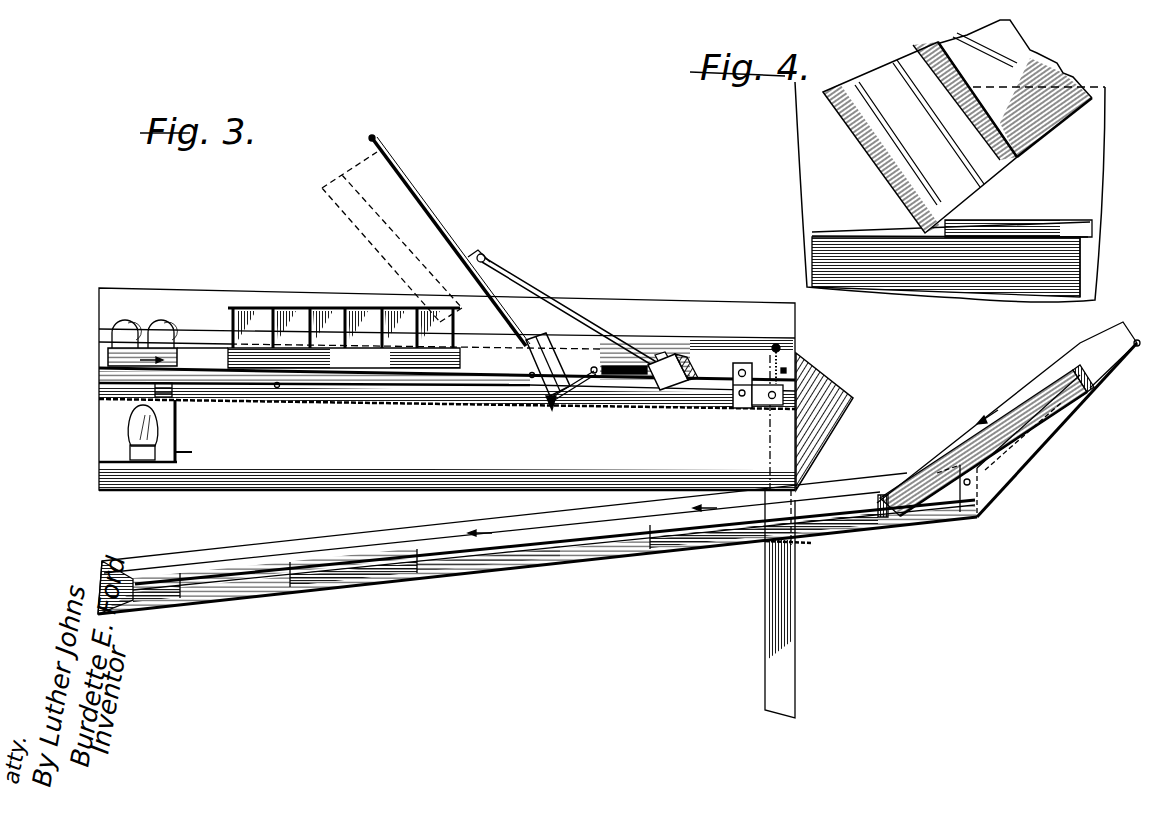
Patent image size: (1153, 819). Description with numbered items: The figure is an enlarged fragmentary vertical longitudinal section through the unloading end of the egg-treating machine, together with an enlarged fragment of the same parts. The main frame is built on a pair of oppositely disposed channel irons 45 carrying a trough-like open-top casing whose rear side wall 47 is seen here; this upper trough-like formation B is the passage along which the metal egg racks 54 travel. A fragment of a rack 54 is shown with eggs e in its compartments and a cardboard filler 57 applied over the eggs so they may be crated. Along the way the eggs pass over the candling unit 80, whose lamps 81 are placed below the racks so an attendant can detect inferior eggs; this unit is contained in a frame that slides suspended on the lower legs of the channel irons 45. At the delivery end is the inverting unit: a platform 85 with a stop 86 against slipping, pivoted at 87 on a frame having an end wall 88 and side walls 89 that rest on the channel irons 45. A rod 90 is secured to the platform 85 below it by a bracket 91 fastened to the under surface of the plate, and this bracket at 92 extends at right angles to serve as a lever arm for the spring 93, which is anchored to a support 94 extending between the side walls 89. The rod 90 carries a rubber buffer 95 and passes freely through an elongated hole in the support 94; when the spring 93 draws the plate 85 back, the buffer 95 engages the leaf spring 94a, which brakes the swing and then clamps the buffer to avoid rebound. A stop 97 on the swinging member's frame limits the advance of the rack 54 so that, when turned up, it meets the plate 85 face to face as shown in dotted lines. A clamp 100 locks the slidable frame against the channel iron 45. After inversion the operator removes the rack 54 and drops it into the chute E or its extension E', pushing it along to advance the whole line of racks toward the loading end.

In FIG. 3, the upper trough-like formation B is at (476, 390).
In FIG. 3, the channel irons 45 is at (202, 385).
In FIG. 4, the channel irons 45 is at (1028, 287).
In FIG. 3, the rear side wall 47 is at (193, 350).
In FIG. 4, the rear side wall 47 is at (842, 223).
In FIG. 3, the egg rack 54 is at (108, 355).
In FIG. 4, the egg rack 54 is at (920, 137).
In FIG. 3, the filler 57 is at (283, 308).
In FIG. 4, the filler 57 is at (1043, 130).
In FIG. 3, the eggs e is at (132, 322).
In FIG. 3, the candling unit 80 is at (113, 417).
In FIG. 3, the lamps 81 is at (142, 425).
In FIG. 3, the platform 85 is at (432, 218).
In FIG. 3, the stop 86 is at (550, 408).
In FIG. 3, the pivot 87 is at (548, 336).
In FIG. 3, the end wall 88 is at (780, 351).
In FIG. 3, the side walls 89 is at (728, 377).
In FIG. 3, the rod 90 is at (540, 292).
In FIG. 3, the bracket 91 is at (485, 254).
In FIG. 3, the lever arm 92 is at (575, 400).
In FIG. 3, the spring 93 is at (610, 365).
In FIG. 3, the support 94 is at (656, 354).
In FIG. 3, the leaf spring 94a is at (684, 378).
In FIG. 3, the buffer 95 is at (670, 358).
In FIG. 3, the stop 97 is at (493, 377).
In FIG. 4, the stop 97 is at (1027, 220).
In FIG. 3, the clamp 100 is at (744, 402).
In FIG. 3, the chute E is at (537, 543).
In FIG. 3, the chute extension E' is at (867, 457).